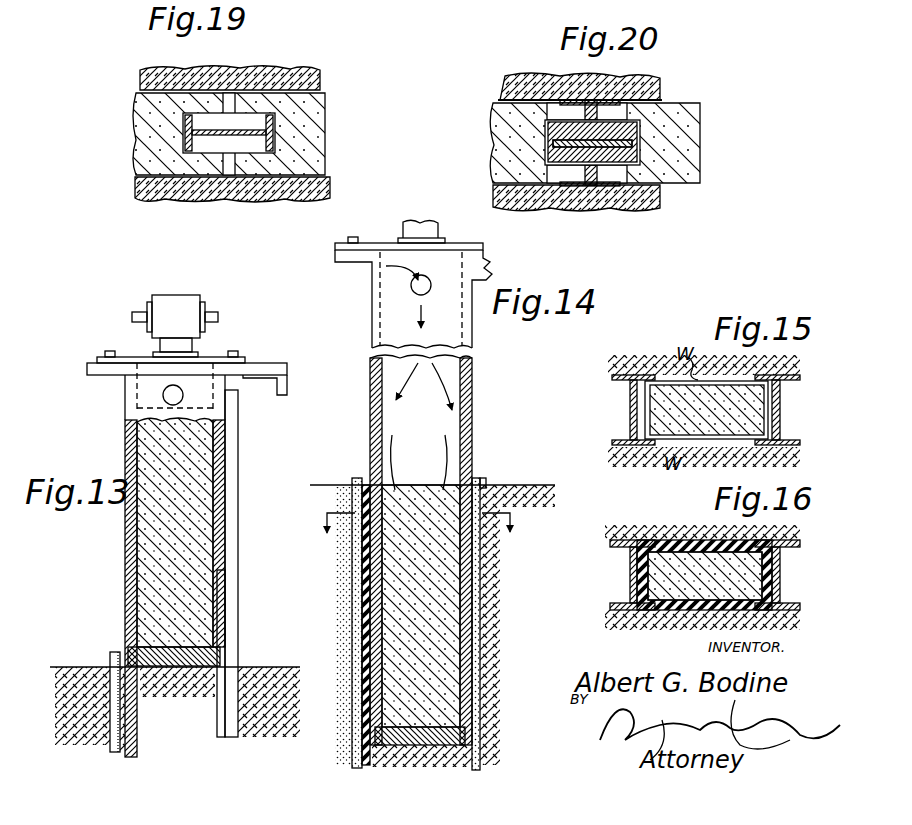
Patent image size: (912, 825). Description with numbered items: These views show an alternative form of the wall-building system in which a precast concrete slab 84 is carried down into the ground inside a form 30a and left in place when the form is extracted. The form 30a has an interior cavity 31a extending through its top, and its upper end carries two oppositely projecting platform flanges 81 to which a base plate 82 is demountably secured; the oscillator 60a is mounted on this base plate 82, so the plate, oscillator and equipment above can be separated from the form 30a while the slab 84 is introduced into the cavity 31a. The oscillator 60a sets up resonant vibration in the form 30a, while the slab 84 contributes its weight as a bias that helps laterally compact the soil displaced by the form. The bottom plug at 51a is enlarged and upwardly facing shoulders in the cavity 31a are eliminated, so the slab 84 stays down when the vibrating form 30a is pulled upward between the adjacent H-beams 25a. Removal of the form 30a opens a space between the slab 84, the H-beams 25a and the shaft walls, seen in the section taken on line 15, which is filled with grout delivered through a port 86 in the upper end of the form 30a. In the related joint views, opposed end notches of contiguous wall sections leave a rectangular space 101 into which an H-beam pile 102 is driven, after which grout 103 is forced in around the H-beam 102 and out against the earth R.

In FIG. 19, the earth R is at (268, 186).
In FIG. 20, the earth R is at (540, 84).
In FIG. 19, the rectangular space 101 is at (213, 146).
In FIG. 20, the rectangular space 101 is at (595, 142).
In FIG. 19, the H-beam pile 102 is at (254, 127).
In FIG. 20, the H-beam pile 102 is at (571, 166).
In FIG. 20, the grout 103 is at (622, 102).
In FIG. 13, the oscillator 60a is at (200, 297).
In FIG. 13, the base plate 82 is at (96, 360).
In FIG. 13, the platform flange 81 is at (289, 369).
In FIG. 13, the port 86 is at (161, 398).
In FIG. 14, the port 86 is at (410, 291).
In FIG. 13, the form 30a is at (125, 556).
In FIG. 14, the form 30a is at (478, 341).
In FIG. 13, the cavity 31a is at (214, 436).
In FIG. 13, the precast concrete slab 84 is at (200, 500).
In FIG. 14, the precast concrete slab 84 is at (440, 576).
In FIG. 15, the precast concrete slab 84 is at (652, 407).
In FIG. 16, the precast concrete slab 84 is at (672, 550).
In FIG. 13, the bottom plate 51a is at (180, 670).
In FIG. 14, the bottom plate 51a is at (373, 738).
In FIG. 13, the H-beam 25a is at (239, 551).
In FIG. 14, the H-beam 25a is at (419, 624).
In FIG. 15, the H-beam 25a is at (782, 410).
In FIG. 16, the H-beam 25a is at (782, 580).
In FIG. 14, the section line 15— 15 is at (420, 537).